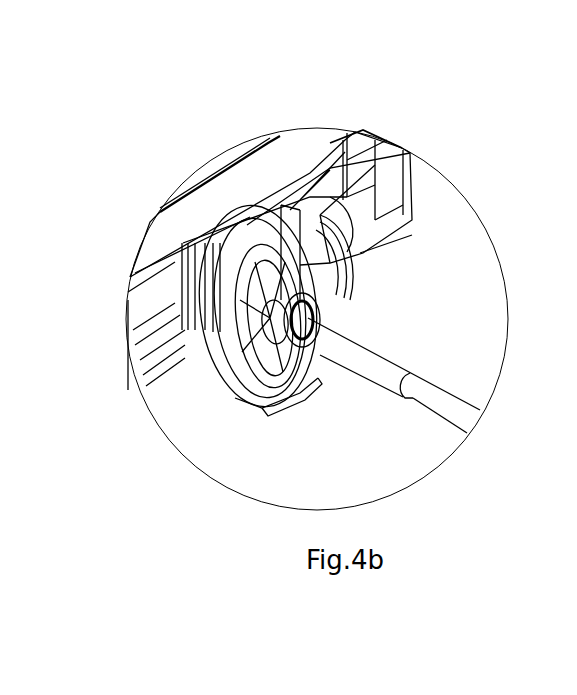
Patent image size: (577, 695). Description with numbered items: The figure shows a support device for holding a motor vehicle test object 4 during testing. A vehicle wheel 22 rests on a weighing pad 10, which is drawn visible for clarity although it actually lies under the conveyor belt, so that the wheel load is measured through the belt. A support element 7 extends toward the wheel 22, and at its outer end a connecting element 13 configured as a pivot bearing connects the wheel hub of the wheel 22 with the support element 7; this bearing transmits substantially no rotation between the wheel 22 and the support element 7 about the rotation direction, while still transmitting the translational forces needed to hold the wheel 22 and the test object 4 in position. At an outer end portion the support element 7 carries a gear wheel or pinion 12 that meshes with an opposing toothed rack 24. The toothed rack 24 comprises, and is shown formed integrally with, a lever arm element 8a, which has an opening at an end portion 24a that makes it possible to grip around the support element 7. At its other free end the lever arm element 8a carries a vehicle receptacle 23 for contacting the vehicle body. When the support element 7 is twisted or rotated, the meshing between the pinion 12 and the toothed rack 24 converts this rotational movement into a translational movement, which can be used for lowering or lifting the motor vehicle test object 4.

The test object 4 is at (267, 167).
The support element 7 is at (383, 360).
The lever arm element 8a is at (412, 215).
The weighing pad 10 is at (273, 390).
The pinion 12 is at (305, 362).
The connecting element 13 is at (275, 297).
The vehicle wheel 22 is at (243, 264).
The vehicle receptacle 23 is at (355, 132).
The toothed rack 24 is at (283, 315).
The end portion 24a is at (295, 343).